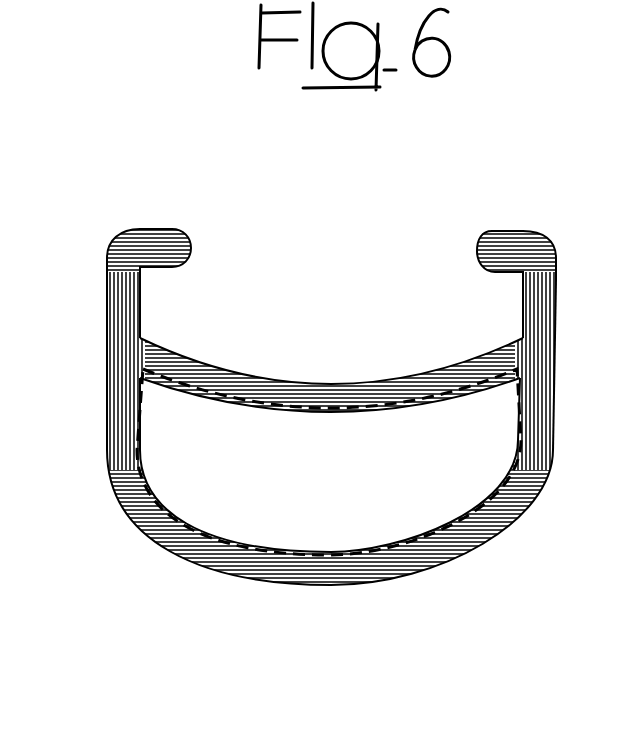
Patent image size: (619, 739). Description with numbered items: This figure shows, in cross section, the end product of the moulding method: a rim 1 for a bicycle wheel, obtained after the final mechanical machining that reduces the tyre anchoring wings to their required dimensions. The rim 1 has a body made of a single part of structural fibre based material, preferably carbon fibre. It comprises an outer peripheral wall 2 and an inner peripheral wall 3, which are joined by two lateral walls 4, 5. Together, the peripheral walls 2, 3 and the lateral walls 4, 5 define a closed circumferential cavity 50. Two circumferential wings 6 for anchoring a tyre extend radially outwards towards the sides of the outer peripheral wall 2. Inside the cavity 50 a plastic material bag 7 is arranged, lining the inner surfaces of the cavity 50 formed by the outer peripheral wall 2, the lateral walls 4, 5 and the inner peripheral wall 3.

The rim 1 is at (320, 413).
The outer peripheral wall 2 is at (253, 382).
The inner peripheral wall 3 is at (330, 586).
The lateral wall 4 is at (118, 408).
The lateral wall 5 is at (555, 441).
The circumferential wing 6 is at (140, 296).
The plastic material bag 7 is at (340, 412).
The closed circumferential cavity 50 is at (403, 473).